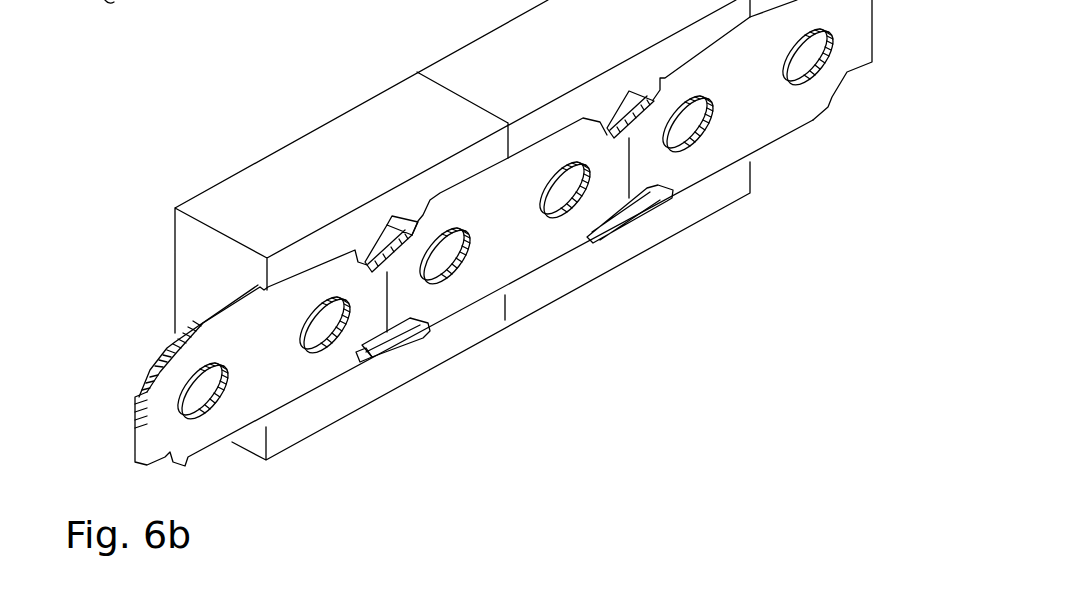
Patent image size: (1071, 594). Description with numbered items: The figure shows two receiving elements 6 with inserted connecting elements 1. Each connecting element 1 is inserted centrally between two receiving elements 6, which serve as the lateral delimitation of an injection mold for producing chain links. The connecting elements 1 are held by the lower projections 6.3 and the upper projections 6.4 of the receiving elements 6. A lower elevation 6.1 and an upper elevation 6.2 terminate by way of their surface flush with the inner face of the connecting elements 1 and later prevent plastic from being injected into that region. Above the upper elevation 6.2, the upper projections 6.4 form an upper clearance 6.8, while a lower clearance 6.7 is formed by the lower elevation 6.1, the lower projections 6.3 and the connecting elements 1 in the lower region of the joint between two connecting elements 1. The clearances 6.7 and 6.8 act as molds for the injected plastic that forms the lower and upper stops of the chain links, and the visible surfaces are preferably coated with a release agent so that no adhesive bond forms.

The connecting element 1 is at (285, 392).
The receiving element 6 is at (248, 185).
The lower elevation 6.1 is at (388, 340).
The upper elevation 6.2 is at (385, 269).
The lower projection 6.3 is at (665, 195).
The upper projection 6.4 is at (404, 223).
The lower clearance 6.7 is at (356, 358).
The upper clearance 6.8 is at (385, 242).